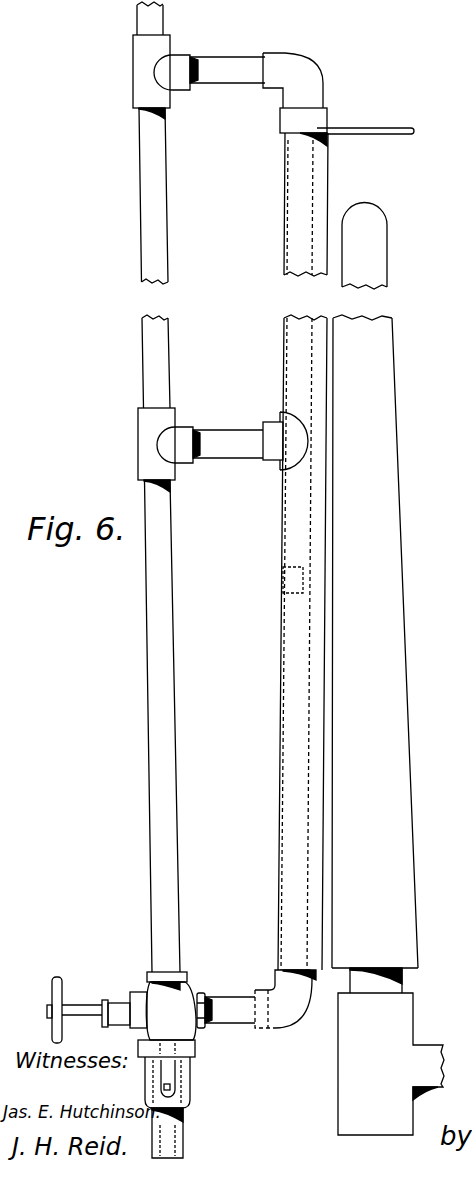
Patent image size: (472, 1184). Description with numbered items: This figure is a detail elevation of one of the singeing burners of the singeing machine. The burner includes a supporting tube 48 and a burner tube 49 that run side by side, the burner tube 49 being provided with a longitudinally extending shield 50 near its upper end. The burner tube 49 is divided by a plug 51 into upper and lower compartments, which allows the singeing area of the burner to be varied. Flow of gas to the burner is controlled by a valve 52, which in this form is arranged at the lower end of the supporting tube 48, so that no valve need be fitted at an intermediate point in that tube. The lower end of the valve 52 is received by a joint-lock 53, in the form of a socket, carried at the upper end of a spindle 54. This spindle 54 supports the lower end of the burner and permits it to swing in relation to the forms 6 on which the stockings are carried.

The form 6 is at (378, 325).
The supporting tube 48 is at (150, 322).
The burner tube 49 is at (290, 326).
The shield 50 is at (378, 130).
The plug 51 is at (296, 580).
The valve 52 is at (151, 1007).
The joint-lock 53 is at (188, 1079).
The spindle 54 is at (185, 1123).